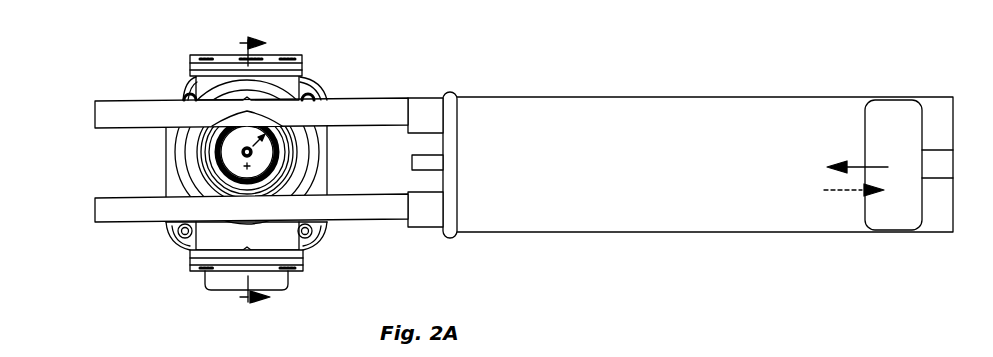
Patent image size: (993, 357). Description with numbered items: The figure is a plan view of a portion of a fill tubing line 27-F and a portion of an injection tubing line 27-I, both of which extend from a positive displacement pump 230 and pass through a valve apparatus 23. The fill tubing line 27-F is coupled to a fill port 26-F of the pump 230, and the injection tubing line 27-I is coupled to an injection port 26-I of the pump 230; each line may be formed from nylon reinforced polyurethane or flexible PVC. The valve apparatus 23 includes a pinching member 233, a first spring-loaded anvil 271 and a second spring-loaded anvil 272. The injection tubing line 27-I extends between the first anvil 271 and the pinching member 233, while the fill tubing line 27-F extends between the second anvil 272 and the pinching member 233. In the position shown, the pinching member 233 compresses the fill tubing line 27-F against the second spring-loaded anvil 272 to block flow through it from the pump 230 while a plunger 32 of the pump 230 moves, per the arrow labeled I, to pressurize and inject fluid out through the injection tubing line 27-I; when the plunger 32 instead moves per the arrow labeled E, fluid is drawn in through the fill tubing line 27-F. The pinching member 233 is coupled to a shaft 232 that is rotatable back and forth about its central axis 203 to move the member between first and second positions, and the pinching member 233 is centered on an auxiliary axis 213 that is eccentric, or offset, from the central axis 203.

The valve apparatus 23 is at (256, 169).
The second spring-loaded anvil 272 is at (250, 98).
The auxiliary axis 213 is at (283, 120).
The fill tubing line 27-F is at (360, 102).
The fill port 26-F is at (430, 104).
The positive displacement pump 230 is at (613, 108).
The plunger 32 is at (888, 105).
The pinching member 233 is at (200, 143).
The central axis 203 is at (228, 165).
The first spring-loaded anvil 271 is at (247, 232).
The shaft 232 is at (258, 192).
The injection tubing line 27-I is at (344, 214).
The injection port 26-I is at (421, 220).